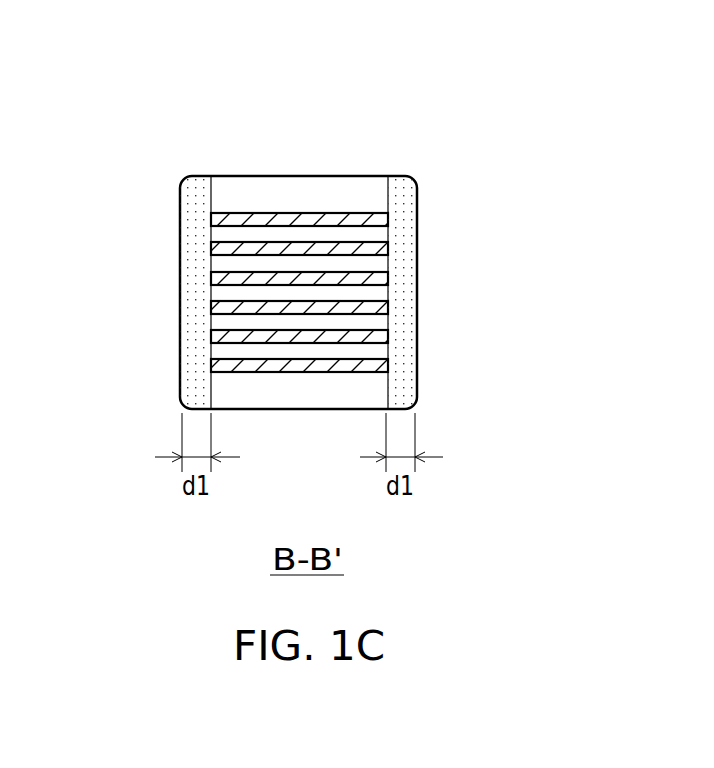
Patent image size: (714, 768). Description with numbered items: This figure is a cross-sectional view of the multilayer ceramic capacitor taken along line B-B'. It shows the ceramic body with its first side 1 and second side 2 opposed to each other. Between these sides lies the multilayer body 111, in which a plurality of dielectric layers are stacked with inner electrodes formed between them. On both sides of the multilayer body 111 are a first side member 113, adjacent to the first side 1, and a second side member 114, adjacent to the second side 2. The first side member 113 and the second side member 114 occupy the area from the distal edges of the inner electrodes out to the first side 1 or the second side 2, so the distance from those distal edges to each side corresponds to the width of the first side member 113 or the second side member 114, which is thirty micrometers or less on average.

The first side 1 is at (167, 325).
The second side 2 is at (435, 277).
The multilayer body 111 is at (308, 163).
The first side member 113 is at (195, 177).
The second side member 114 is at (403, 178).